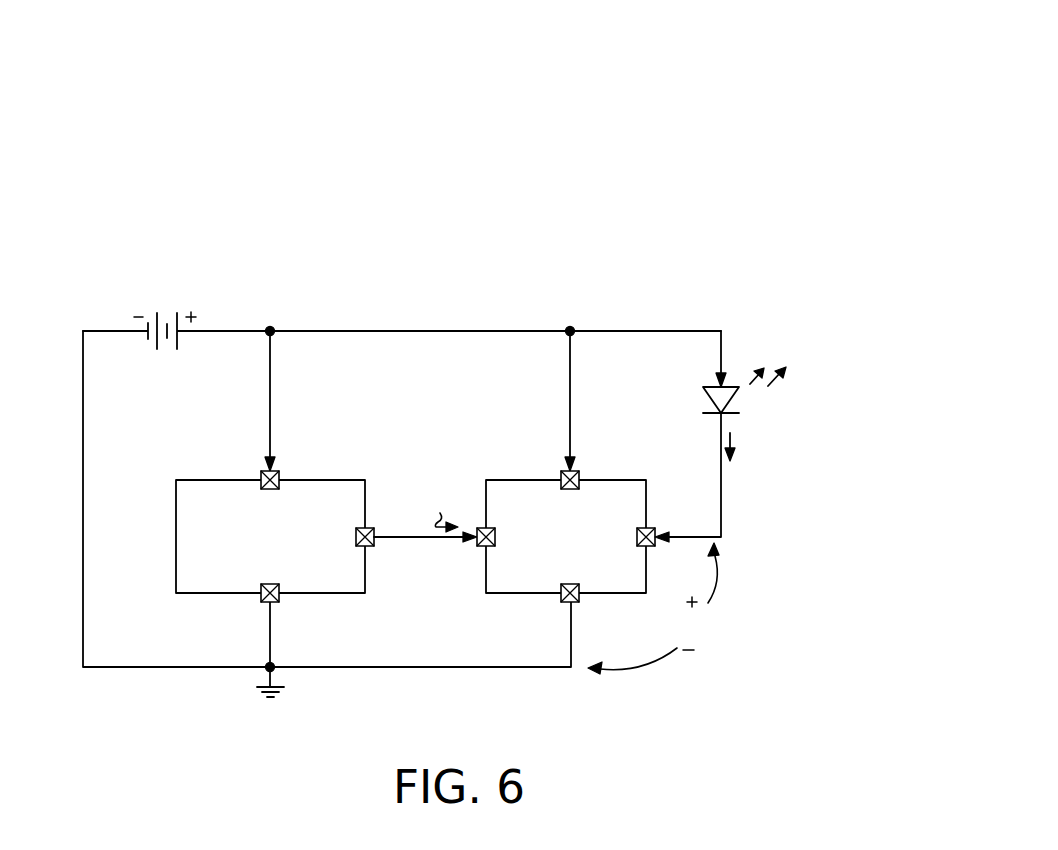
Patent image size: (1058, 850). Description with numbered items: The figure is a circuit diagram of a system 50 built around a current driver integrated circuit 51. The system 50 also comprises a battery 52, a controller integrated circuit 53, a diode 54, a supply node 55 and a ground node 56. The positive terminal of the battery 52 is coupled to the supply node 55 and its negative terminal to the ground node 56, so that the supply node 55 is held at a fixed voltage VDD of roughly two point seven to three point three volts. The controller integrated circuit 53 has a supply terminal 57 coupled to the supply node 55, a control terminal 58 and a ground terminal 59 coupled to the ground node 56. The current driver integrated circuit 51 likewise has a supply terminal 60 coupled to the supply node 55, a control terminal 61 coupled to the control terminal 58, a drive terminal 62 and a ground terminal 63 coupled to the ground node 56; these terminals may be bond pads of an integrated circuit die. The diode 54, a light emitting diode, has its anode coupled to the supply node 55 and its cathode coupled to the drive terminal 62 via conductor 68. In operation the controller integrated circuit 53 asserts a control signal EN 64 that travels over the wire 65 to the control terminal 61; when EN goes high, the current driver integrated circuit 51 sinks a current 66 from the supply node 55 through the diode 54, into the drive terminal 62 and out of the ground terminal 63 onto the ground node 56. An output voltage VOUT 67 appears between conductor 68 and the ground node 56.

The system 50 is at (610, 82).
The current driver integrated circuit 51 is at (618, 480).
The battery 52 is at (200, 288).
The controller integrated circuit 53 is at (202, 480).
The diode 54 is at (712, 396).
The supply node 55 is at (421, 331).
The ground node 56 is at (273, 679).
The supply terminal 57 is at (281, 476).
The control terminal 58 is at (373, 530).
The ground terminal 59 is at (281, 597).
The supply terminal 60 is at (562, 473).
The control terminal 61 is at (477, 547).
The drive terminal 62 is at (655, 530).
The ground terminal 63 is at (563, 603).
The control signal EN 64 is at (444, 500).
The enable signal wire 65 is at (422, 537).
The diode current 66 is at (733, 447).
The output voltage VOUT 67 is at (653, 608).
The conductor 68 is at (722, 506).